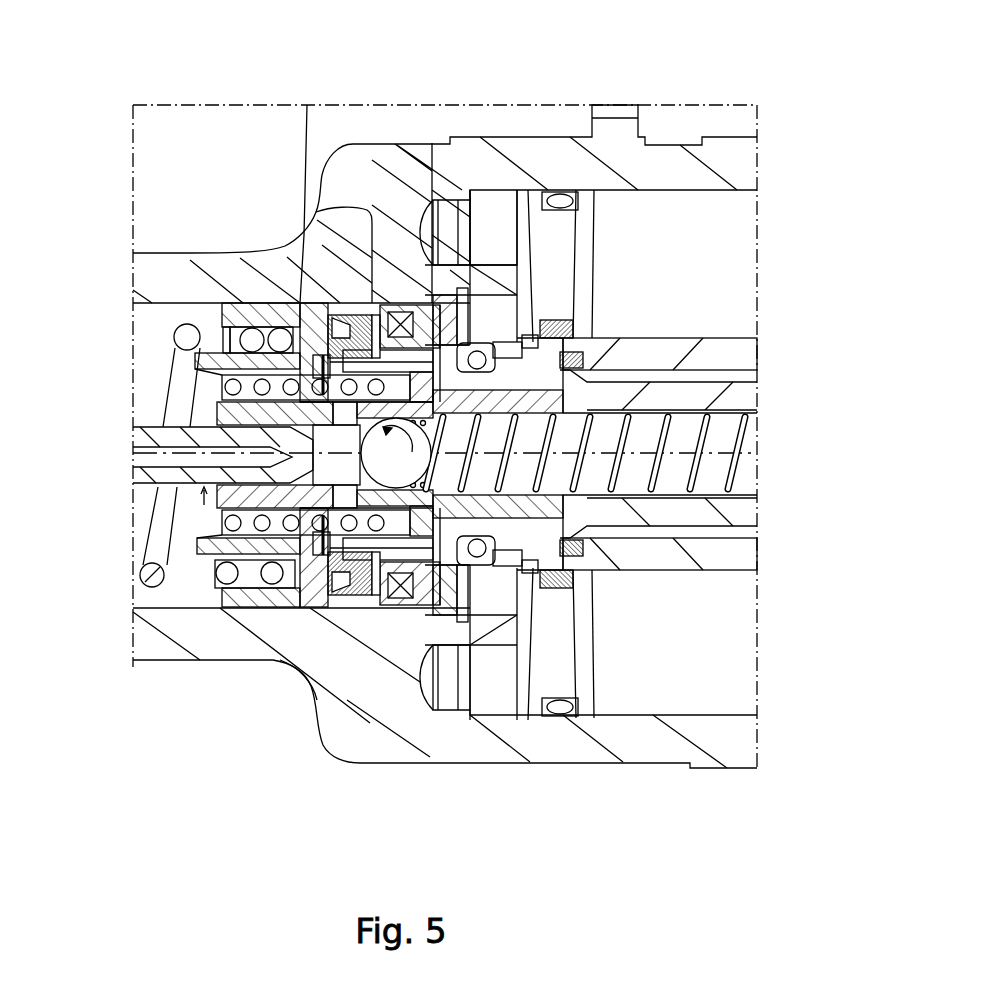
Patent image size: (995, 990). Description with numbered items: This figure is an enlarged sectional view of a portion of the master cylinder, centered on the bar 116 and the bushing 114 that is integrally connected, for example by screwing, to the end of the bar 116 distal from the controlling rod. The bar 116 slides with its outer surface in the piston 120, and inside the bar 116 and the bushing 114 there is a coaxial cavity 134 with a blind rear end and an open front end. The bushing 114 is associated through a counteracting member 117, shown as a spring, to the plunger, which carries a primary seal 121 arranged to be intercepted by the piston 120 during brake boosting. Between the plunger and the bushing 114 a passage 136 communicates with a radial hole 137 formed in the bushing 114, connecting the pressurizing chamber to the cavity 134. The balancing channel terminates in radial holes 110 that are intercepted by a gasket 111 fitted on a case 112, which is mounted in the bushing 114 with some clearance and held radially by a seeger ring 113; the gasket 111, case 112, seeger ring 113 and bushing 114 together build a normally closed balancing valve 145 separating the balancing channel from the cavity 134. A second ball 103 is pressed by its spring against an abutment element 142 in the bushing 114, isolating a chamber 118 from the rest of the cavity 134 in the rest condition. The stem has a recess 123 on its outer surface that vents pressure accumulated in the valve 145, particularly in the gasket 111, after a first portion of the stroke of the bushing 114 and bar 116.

The second ball 103 is at (423, 517).
The radial hole 110 is at (135, 448).
The gasket 111 is at (272, 392).
The case 112 is at (303, 590).
The seeger ring 113 is at (225, 417).
The bushing 114 is at (462, 678).
The bar 116 is at (540, 380).
The counteracting member 117 is at (277, 253).
The chamber 118 is at (330, 590).
The piston 120 is at (470, 237).
The primary seal 121 is at (318, 212).
The recess 123 is at (217, 497).
The cavity 134 is at (668, 475).
The passage 136 is at (227, 288).
The radial hole 137 is at (400, 467).
The abutment element 142 is at (432, 150).
The balancing valve 145 is at (335, 468).